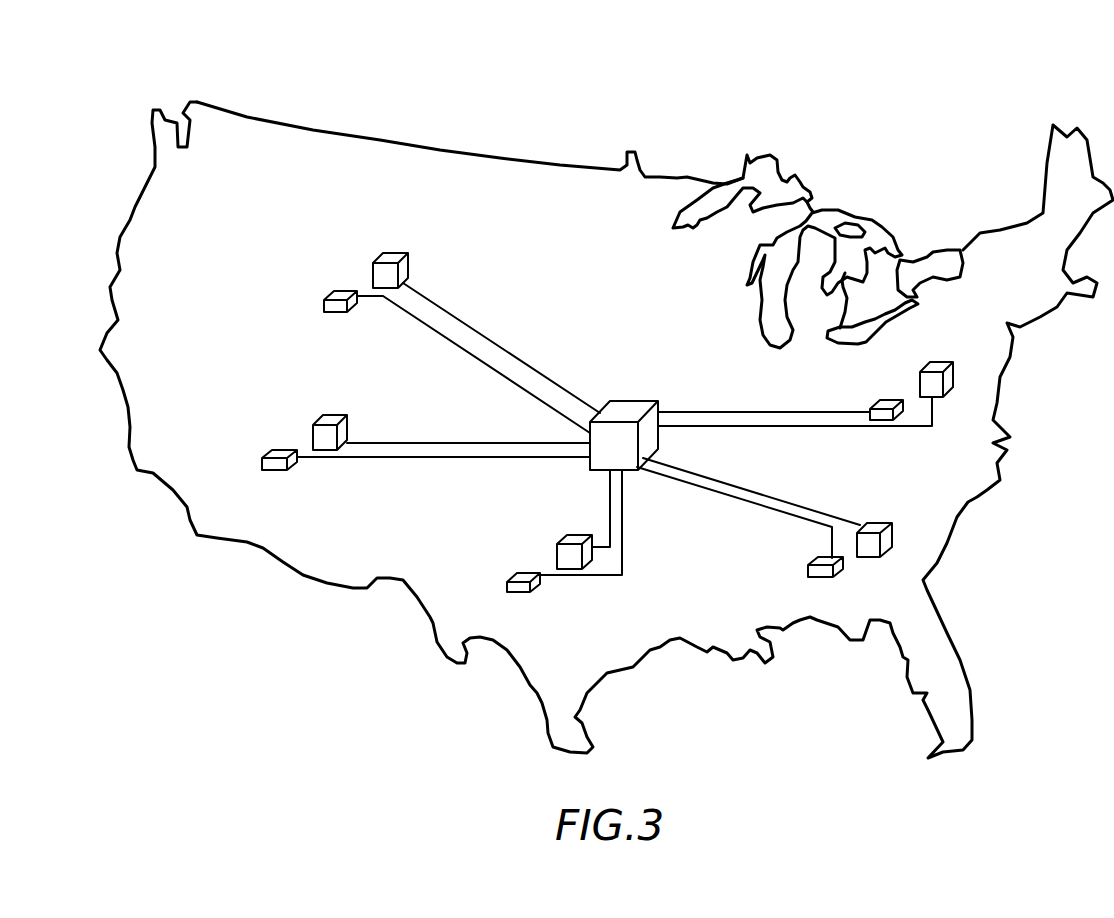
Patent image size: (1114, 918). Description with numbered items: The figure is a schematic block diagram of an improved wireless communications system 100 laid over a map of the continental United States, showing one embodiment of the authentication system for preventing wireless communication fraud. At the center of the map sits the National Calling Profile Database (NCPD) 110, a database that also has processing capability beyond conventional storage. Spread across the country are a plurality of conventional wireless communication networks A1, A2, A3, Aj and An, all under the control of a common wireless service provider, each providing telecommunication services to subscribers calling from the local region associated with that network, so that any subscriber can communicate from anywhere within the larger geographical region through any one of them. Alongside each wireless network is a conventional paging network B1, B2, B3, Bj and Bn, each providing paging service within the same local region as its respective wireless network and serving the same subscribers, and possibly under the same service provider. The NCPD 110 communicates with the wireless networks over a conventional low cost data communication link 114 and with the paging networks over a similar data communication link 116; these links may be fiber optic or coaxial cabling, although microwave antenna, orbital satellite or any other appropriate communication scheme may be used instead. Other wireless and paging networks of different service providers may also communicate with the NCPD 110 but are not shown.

The wireless communications system 100 is at (647, 115).
The National Calling Profile Database (NCPD) 110 is at (620, 402).
The data communication link 114 is at (692, 428).
The data communication link 116 is at (806, 411).
The wireless communication network A1 is at (403, 272).
The wireless communication network A2 is at (345, 433).
The wireless communication network A3 is at (576, 541).
The wireless communication network An is at (947, 397).
The wireless communication network Aj is at (870, 545).
The paging network B1 is at (333, 312).
The paging network B2 is at (280, 470).
The paging network B3 is at (513, 593).
The paging network Bn is at (888, 403).
The paging network Bj is at (828, 577).